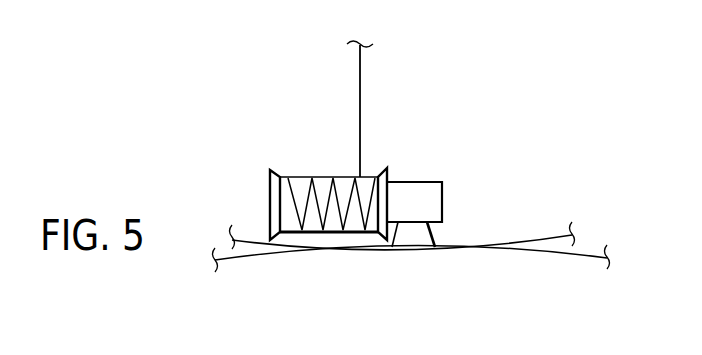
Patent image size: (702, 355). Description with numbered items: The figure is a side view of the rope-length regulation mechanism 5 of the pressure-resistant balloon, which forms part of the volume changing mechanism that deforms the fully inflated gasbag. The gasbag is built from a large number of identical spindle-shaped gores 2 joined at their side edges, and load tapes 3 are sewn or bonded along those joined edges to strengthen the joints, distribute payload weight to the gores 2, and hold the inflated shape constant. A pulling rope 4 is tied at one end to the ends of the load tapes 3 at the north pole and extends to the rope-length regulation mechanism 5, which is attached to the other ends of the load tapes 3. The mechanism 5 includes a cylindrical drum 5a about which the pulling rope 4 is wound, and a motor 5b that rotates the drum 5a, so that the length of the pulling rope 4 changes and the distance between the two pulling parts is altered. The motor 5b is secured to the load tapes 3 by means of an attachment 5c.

The gore 2 is at (226, 263).
The load tape 3 is at (317, 250).
The pulling rope 4 is at (362, 99).
The rope-length regulation mechanism 5 is at (442, 153).
The cylindrical drum 5a is at (270, 191).
The motor 5b is at (443, 197).
The attachment 5c is at (437, 237).